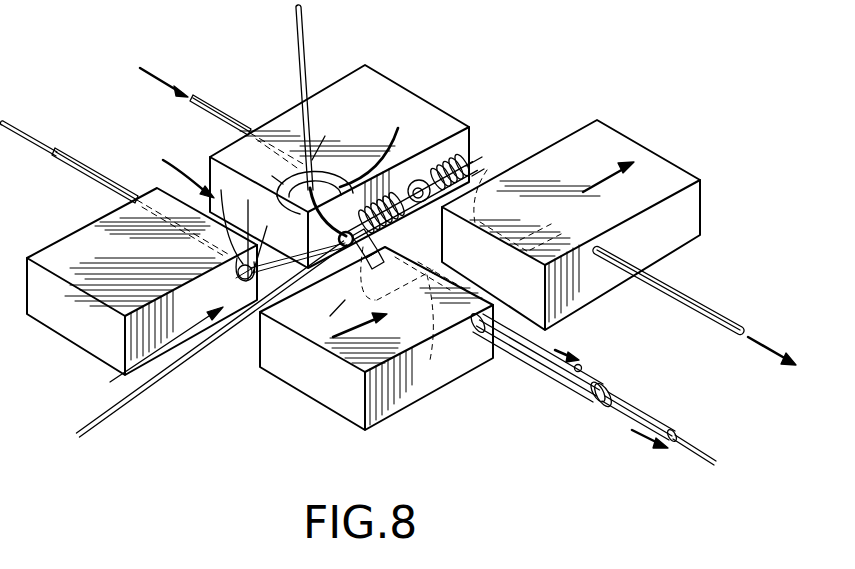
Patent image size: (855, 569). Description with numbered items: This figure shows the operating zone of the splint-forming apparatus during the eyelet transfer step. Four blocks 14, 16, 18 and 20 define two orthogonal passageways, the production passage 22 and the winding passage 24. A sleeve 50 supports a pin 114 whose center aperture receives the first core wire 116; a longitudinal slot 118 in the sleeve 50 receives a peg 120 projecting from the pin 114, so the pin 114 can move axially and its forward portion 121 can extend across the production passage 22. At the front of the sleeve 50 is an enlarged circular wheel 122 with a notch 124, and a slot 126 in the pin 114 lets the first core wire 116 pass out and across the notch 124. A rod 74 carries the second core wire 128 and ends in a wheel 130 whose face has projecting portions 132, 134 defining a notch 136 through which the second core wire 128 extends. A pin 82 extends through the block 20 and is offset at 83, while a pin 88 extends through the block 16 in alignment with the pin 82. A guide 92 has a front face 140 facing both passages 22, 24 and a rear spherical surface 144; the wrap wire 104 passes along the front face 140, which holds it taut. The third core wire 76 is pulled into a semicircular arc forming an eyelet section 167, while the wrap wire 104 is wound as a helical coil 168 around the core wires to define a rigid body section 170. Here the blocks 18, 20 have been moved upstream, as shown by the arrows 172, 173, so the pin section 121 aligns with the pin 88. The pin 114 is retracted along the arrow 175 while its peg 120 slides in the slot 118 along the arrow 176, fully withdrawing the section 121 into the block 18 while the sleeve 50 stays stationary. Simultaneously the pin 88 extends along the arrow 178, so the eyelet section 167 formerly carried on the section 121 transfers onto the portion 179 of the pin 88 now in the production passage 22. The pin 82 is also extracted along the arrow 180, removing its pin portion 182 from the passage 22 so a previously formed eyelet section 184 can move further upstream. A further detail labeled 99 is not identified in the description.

The block 14 is at (108, 261).
The block 16 is at (366, 104).
The block 18 is at (413, 341).
The block 20 is at (606, 157).
The production passage 22 is at (151, 352).
The winding passage 24 is at (182, 167).
The sleeve 50 is at (582, 402).
The rod 74 is at (100, 176).
The third core wire 76 is at (132, 405).
The pin 82 is at (697, 303).
The offset 83 is at (547, 233).
The pin 88 is at (223, 111).
The guide 92 is at (320, 183).
The coil end 99 is at (265, 174).
The wrap wire 104 is at (305, 46).
The pin 114 is at (637, 410).
The first core wire 116 is at (707, 455).
The longitudinal slot 118 is at (543, 340).
The peg 120 is at (583, 367).
The forward portion of pin 121 is at (408, 355).
The circular wheel 122 is at (321, 316).
The notch 124 is at (388, 231).
The slot 126 is at (442, 240).
The second core wire 128 is at (20, 122).
The wheel 130 is at (235, 228).
The projecting portion 132 is at (234, 287).
The projecting portion 134 is at (276, 241).
The notch 136 is at (255, 235).
The front face 140 is at (378, 149).
The spherical surface 144 is at (335, 136).
The eyelet section 167 is at (360, 268).
The helical coil 168 is at (445, 160).
The body section 170 is at (420, 176).
The arrow 172 is at (610, 184).
The arrow 173 is at (332, 338).
The arrow 175 is at (630, 450).
The arrow 176 is at (580, 344).
The arrow 178 is at (180, 64).
The portion of pin 179 is at (318, 231).
The arrow 180 is at (763, 339).
The pin portion 182 is at (462, 176).
The previously formed eyelet section 184 is at (450, 168).